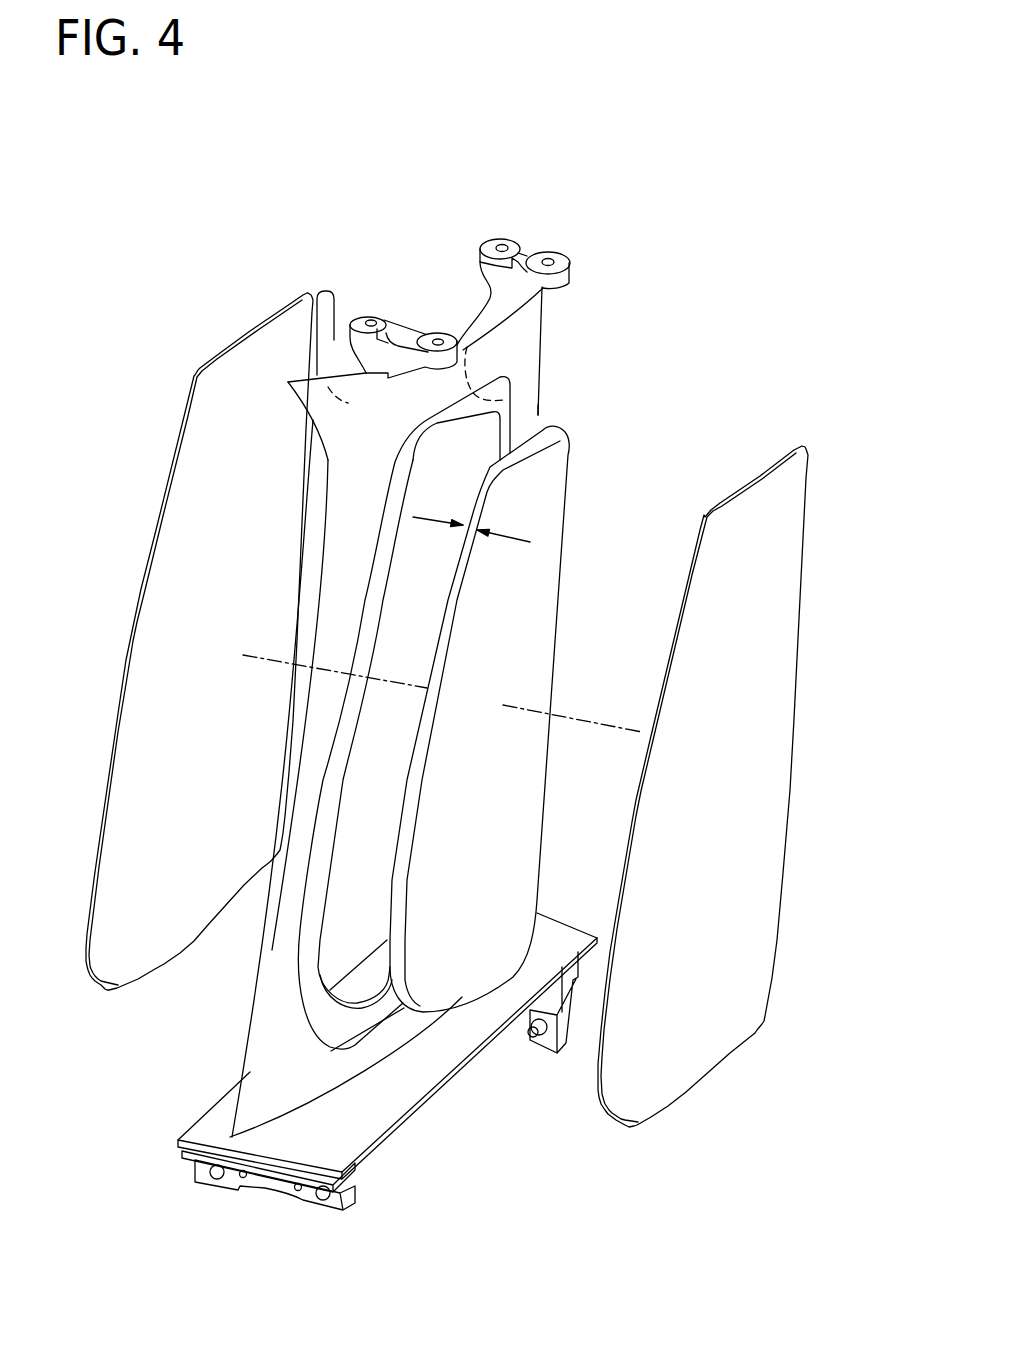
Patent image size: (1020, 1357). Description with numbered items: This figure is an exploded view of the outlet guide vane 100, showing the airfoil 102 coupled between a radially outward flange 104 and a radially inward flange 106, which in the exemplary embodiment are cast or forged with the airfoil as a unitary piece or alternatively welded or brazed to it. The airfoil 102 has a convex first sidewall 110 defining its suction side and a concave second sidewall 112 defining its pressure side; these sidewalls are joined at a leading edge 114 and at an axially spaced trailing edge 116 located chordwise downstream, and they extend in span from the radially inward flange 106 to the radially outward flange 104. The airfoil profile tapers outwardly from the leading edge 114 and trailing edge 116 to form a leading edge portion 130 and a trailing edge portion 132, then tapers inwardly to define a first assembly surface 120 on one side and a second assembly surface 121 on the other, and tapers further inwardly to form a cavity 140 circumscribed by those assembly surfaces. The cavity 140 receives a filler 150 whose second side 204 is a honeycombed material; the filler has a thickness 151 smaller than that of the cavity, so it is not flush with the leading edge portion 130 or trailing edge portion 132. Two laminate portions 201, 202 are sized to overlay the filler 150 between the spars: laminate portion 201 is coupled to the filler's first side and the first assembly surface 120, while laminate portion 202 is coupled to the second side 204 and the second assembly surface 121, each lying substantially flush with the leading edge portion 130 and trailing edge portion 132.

The outlet guide vane 100 is at (250, 222).
The airfoil 102 is at (222, 1000).
The radially outward flange 104 is at (540, 262).
The radially inward flange 106 is at (377, 1138).
The first sidewall 110 is at (523, 337).
The second sidewall 112 is at (336, 397).
The leading edge 114 is at (258, 1043).
The trailing edge 116 is at (538, 412).
The first assembly surface 120 is at (507, 393).
The second assembly surface 121 is at (470, 337).
The leading edge portion 130 is at (288, 903).
The trailing edge portion 132 is at (552, 440).
The cavity 140 is at (392, 705).
The filler 150 is at (525, 618).
The thickness 151 is at (505, 533).
The laminate portion 201 is at (785, 578).
The laminate portion 202 is at (215, 520).
The second side 204 is at (407, 803).